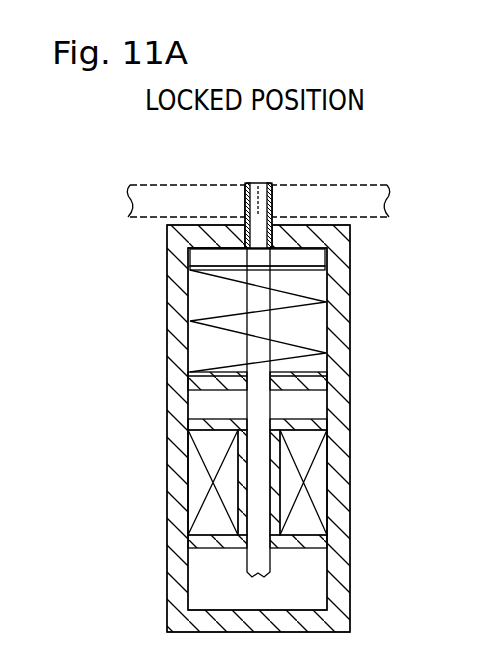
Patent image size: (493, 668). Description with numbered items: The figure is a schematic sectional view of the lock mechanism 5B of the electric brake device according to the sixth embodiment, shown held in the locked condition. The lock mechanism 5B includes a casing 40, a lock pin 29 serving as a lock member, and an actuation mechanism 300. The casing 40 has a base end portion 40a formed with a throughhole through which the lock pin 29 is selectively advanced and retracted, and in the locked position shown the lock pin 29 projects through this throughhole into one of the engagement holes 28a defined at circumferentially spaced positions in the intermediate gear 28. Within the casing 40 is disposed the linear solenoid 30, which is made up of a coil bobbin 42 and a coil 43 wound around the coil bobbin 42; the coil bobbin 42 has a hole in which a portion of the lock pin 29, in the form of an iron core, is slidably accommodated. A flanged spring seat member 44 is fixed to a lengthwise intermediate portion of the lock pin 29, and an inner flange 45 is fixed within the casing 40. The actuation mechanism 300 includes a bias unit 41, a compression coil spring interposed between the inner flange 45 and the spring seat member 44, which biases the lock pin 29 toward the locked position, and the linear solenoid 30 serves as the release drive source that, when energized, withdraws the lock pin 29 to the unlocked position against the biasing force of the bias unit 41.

The lock mechanism 5B is at (163, 544).
The intermediate gear 28 is at (325, 200).
The engagement holes 28a is at (248, 183).
The lock pin 29 is at (255, 188).
The spring seat member 44 is at (315, 257).
The casing 40 is at (186, 310).
The base end portion 40a is at (228, 233).
The inner flange 45 is at (292, 382).
The actuation mechanism 300 is at (427, 453).
The coil 43 is at (196, 478).
The bias unit 41 is at (310, 443).
The linear solenoid 30 is at (283, 466).
The coil bobbin 42 is at (275, 546).